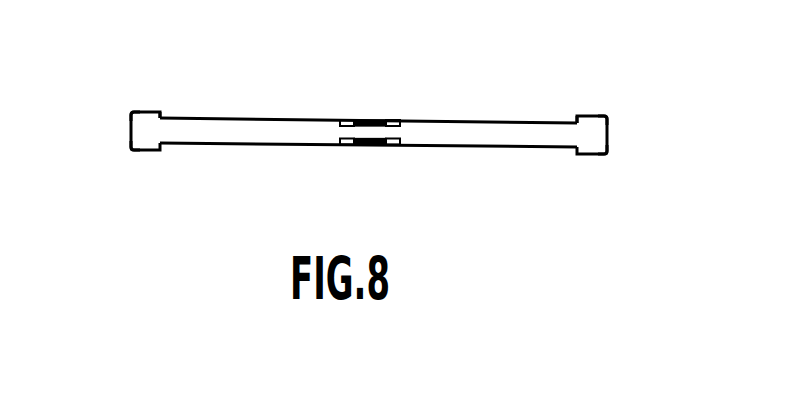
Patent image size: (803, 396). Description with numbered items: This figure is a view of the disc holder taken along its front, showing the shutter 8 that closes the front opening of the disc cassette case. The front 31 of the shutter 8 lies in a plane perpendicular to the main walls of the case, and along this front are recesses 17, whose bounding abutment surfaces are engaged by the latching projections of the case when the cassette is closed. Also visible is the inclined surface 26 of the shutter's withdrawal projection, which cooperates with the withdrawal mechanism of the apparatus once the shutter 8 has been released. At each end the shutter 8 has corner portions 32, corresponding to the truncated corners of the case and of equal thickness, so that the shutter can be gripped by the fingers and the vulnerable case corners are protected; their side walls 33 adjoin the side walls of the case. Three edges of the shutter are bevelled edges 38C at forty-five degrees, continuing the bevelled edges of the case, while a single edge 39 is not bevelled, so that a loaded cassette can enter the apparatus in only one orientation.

The shutter 8 is at (502, 121).
The recesses 17 is at (347, 120).
The inclined surface 26 is at (367, 121).
The front of the shutter 31 is at (494, 139).
The corner portions 32 is at (153, 112).
The side walls of the corner portions 33 is at (130, 127).
The bevelled edges 38C is at (132, 148).
The non-bevelled edge 39 is at (132, 113).